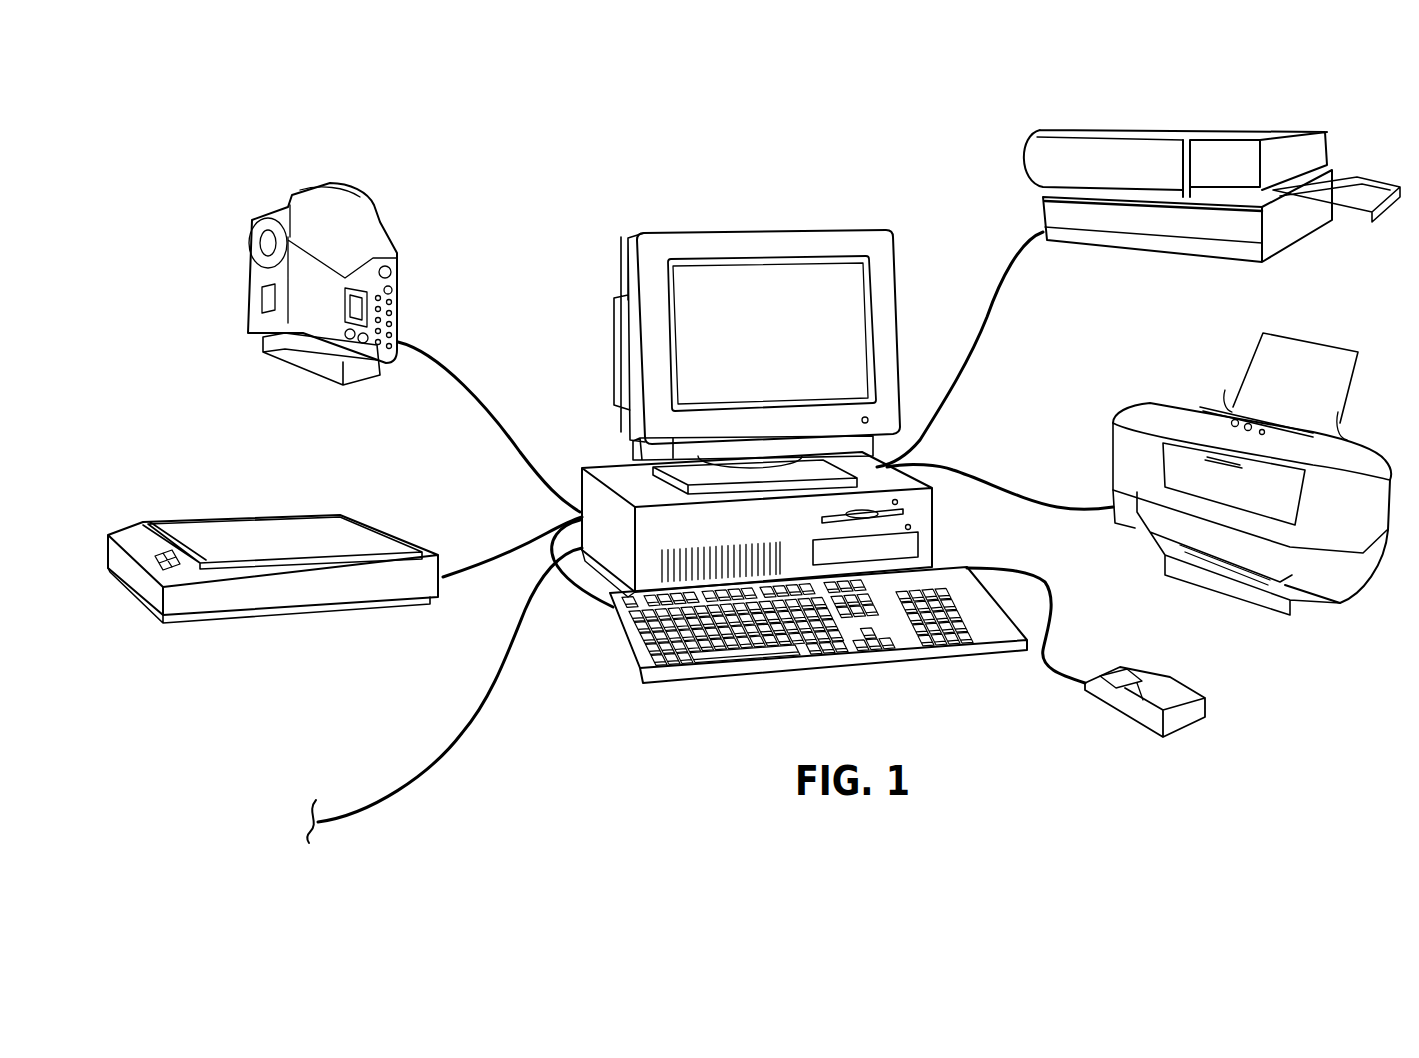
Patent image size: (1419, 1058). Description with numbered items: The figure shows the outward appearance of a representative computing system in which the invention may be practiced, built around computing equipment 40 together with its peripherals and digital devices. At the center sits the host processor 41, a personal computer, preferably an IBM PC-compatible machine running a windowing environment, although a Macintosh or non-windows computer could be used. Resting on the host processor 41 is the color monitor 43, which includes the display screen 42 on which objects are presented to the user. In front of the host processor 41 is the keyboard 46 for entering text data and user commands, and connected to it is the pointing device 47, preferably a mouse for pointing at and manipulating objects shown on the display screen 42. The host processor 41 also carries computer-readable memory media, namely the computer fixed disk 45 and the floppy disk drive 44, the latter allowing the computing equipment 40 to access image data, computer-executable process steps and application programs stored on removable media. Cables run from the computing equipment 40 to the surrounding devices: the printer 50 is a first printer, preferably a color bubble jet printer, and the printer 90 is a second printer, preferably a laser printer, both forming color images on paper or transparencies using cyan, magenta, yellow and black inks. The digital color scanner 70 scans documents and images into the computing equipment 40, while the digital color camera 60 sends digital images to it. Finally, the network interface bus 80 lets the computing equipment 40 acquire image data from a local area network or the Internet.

The computing equipment 40 is at (848, 193).
The host processor 41 is at (592, 467).
The display screen 42 is at (848, 357).
The color monitor 43 is at (733, 228).
The floppy disk drive 44 is at (903, 513).
The computer fixed disk 45 is at (914, 545).
The keyboard 46 is at (708, 657).
The pointing device 47 is at (1190, 730).
The printer 50 is at (1195, 386).
The digital color camera 60 is at (397, 253).
The digital color scanner 70 is at (333, 613).
The network interface bus 80 is at (384, 846).
The printer 90 is at (1098, 122).